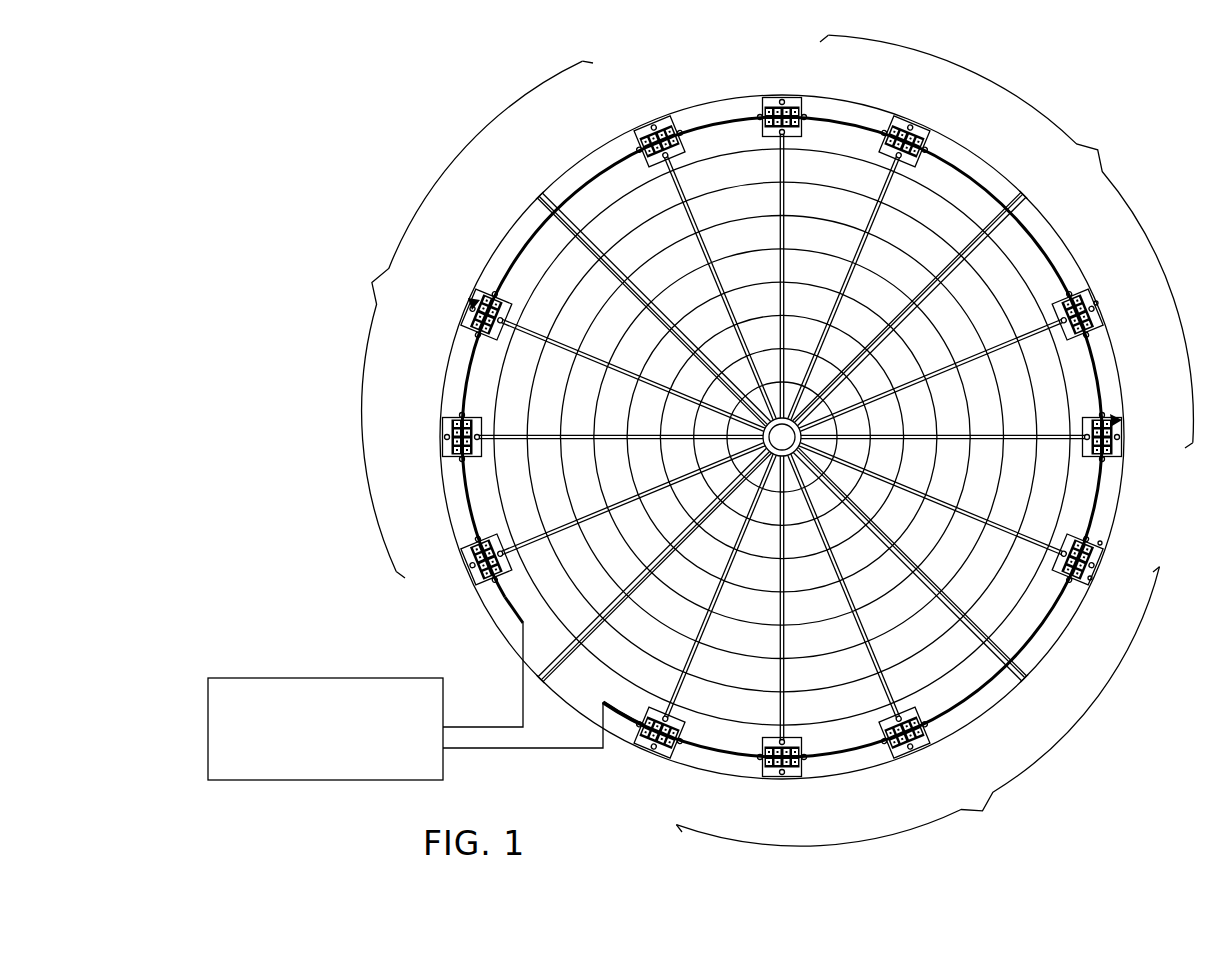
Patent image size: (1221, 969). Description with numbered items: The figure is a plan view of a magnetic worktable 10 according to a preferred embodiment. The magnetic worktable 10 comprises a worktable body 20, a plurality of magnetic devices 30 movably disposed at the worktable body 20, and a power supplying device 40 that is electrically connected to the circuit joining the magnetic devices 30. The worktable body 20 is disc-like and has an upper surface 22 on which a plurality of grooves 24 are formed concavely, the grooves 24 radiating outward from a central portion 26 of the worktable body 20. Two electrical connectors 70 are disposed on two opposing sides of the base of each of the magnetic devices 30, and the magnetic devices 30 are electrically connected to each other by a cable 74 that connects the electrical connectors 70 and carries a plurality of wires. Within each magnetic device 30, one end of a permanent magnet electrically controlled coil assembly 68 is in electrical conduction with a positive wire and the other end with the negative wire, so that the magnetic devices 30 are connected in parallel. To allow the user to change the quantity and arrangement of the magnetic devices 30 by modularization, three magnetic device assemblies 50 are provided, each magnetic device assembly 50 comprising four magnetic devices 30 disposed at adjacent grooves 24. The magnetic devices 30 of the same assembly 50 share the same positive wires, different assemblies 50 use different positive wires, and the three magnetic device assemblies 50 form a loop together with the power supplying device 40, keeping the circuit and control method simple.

The magnetic worktable 10 is at (242, 208).
The worktable body 20 is at (484, 615).
The upper surface 22 is at (627, 745).
The grooves 24 is at (640, 183).
The central portion 26 is at (856, 248).
The magnetic devices 30 is at (666, 122).
The power supplying device 40 is at (276, 678).
The magnetic device assemblies 50 is at (762, 440).
The permanent magnet electrically controlled coil assembly 68 is at (472, 302).
The electrical connectors 70 is at (1097, 303).
The cable 74 is at (1036, 636).